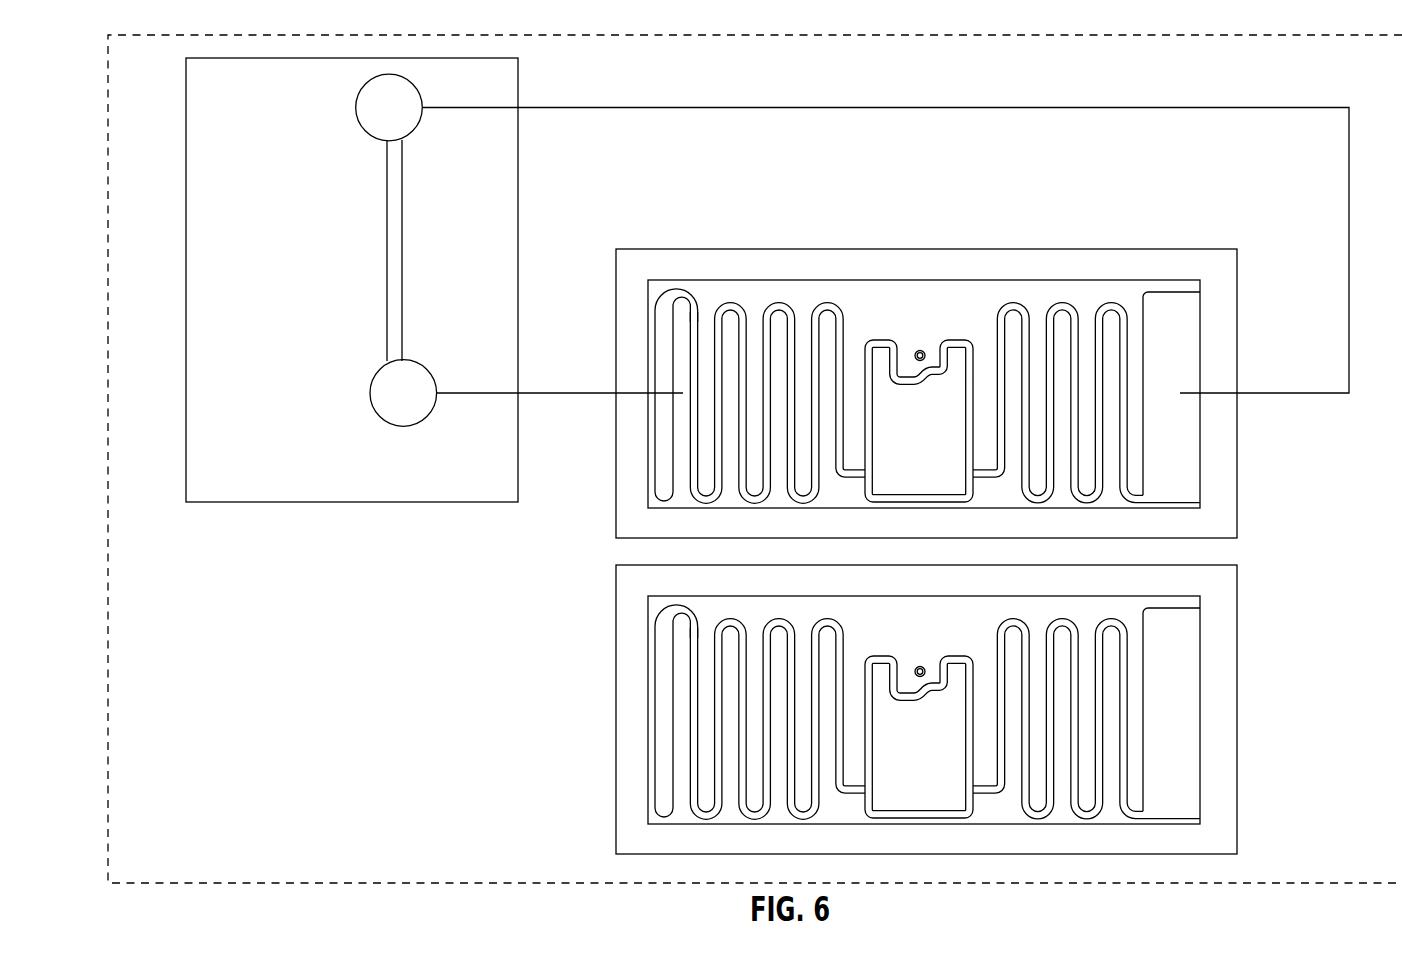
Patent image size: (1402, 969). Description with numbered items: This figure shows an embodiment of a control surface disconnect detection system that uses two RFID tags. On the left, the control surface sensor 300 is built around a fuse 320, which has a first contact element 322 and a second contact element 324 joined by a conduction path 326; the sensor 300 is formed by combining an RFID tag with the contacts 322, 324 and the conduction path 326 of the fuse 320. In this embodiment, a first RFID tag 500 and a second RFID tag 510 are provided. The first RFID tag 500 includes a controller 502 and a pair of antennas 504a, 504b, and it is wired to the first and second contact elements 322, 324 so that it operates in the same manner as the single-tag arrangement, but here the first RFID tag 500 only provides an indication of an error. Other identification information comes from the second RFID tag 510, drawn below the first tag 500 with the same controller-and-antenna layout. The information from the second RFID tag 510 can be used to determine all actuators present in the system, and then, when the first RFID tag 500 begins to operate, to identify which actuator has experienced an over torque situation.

The control surface sensor 300 is at (195, 33).
The fuse 320 is at (350, 503).
The first contact element 322 is at (371, 392).
The second contact element 324 is at (355, 108).
The conduction path 326 is at (404, 254).
The first RFID tag 500 is at (877, 247).
The controller 502 is at (950, 352).
The antenna 504a is at (732, 302).
The antenna 504b is at (1063, 305).
The second RFID tag 510 is at (608, 710).